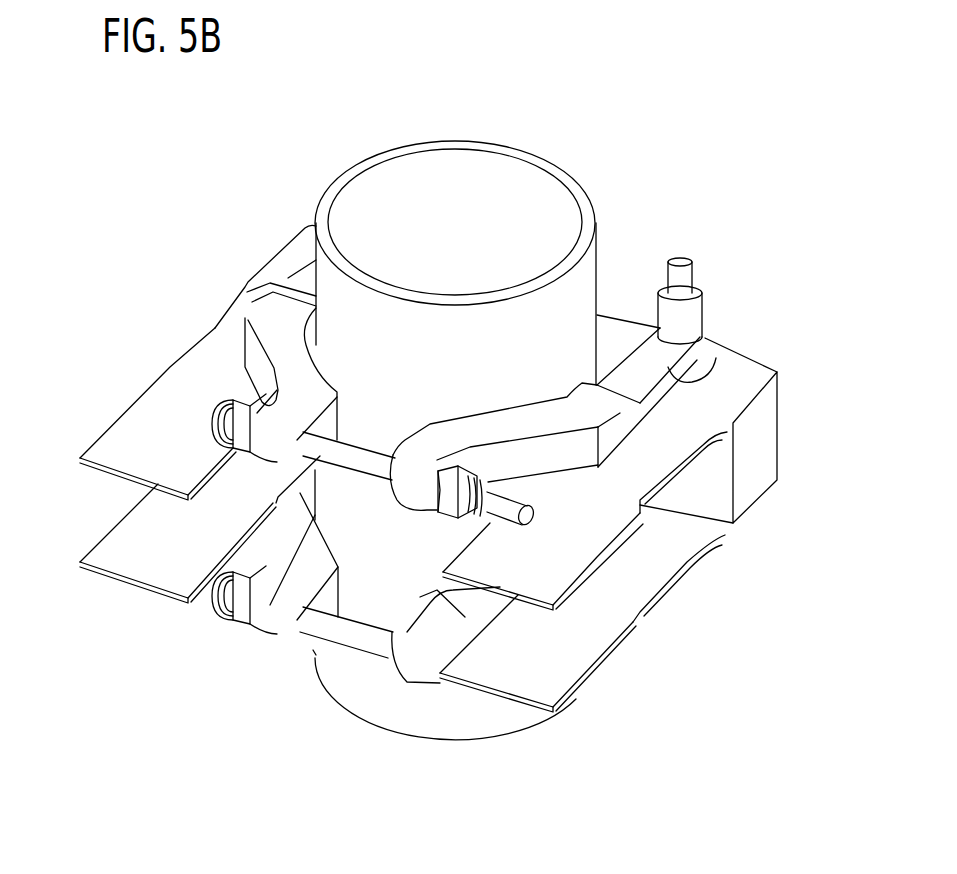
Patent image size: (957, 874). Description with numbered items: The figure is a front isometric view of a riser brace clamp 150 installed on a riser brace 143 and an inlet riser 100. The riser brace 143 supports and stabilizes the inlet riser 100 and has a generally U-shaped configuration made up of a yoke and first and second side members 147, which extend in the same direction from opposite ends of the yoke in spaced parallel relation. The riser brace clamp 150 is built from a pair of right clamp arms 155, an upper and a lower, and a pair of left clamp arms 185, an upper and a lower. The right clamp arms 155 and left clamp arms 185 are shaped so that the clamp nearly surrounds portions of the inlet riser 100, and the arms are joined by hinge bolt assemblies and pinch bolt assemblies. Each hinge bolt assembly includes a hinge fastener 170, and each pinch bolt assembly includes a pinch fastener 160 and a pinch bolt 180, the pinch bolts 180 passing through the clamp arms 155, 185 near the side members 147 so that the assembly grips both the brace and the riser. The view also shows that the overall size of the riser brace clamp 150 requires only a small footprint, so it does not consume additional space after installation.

The inlet riser 100 is at (549, 153).
The left clamp arm 185 is at (270, 321).
The side member 147 is at (111, 405).
The riser brace 143 is at (791, 461).
The hinge fastener 170 is at (713, 290).
The right clamp arm 155 is at (574, 454).
The pinch fastener 160 is at (492, 528).
The pinch bolt 180 is at (346, 469).
The riser brace clamp 150 is at (349, 741).